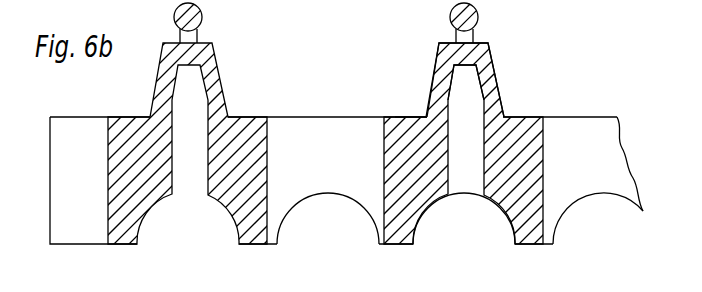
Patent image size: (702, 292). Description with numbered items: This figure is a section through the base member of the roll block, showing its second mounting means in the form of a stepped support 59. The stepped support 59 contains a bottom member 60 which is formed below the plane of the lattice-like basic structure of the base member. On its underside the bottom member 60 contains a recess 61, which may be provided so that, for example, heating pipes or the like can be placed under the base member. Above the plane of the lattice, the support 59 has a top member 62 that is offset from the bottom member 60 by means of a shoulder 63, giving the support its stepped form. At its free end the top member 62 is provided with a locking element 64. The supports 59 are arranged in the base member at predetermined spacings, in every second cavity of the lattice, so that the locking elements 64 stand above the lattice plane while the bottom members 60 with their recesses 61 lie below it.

The stepped support 59 is at (533, 88).
The bottom member 60 is at (529, 175).
The recess 61 is at (412, 235).
The top member 62 is at (486, 80).
The shoulder 63 is at (406, 116).
The locking element 64 is at (477, 24).